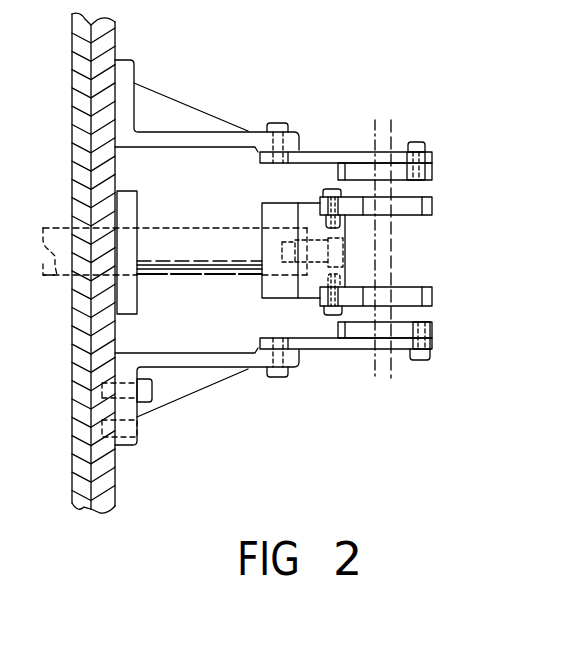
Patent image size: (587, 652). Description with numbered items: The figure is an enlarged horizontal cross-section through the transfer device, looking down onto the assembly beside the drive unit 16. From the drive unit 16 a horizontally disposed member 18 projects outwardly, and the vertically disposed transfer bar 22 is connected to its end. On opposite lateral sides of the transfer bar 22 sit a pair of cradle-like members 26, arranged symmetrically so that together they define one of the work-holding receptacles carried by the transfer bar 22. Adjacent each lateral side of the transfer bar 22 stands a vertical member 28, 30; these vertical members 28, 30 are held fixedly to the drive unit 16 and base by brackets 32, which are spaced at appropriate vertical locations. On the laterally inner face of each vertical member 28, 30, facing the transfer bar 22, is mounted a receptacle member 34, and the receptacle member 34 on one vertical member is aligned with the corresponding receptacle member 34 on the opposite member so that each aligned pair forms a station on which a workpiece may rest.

The drive unit 16 is at (117, 33).
The horizontally disposed member 18 is at (228, 278).
The transfer bar 22 is at (272, 203).
The cradle-like member 26 is at (432, 208).
The vertical member 28 is at (362, 351).
The vertical member 30 is at (317, 152).
The bracket 32 is at (173, 105).
The receptacle member 34 is at (432, 168).